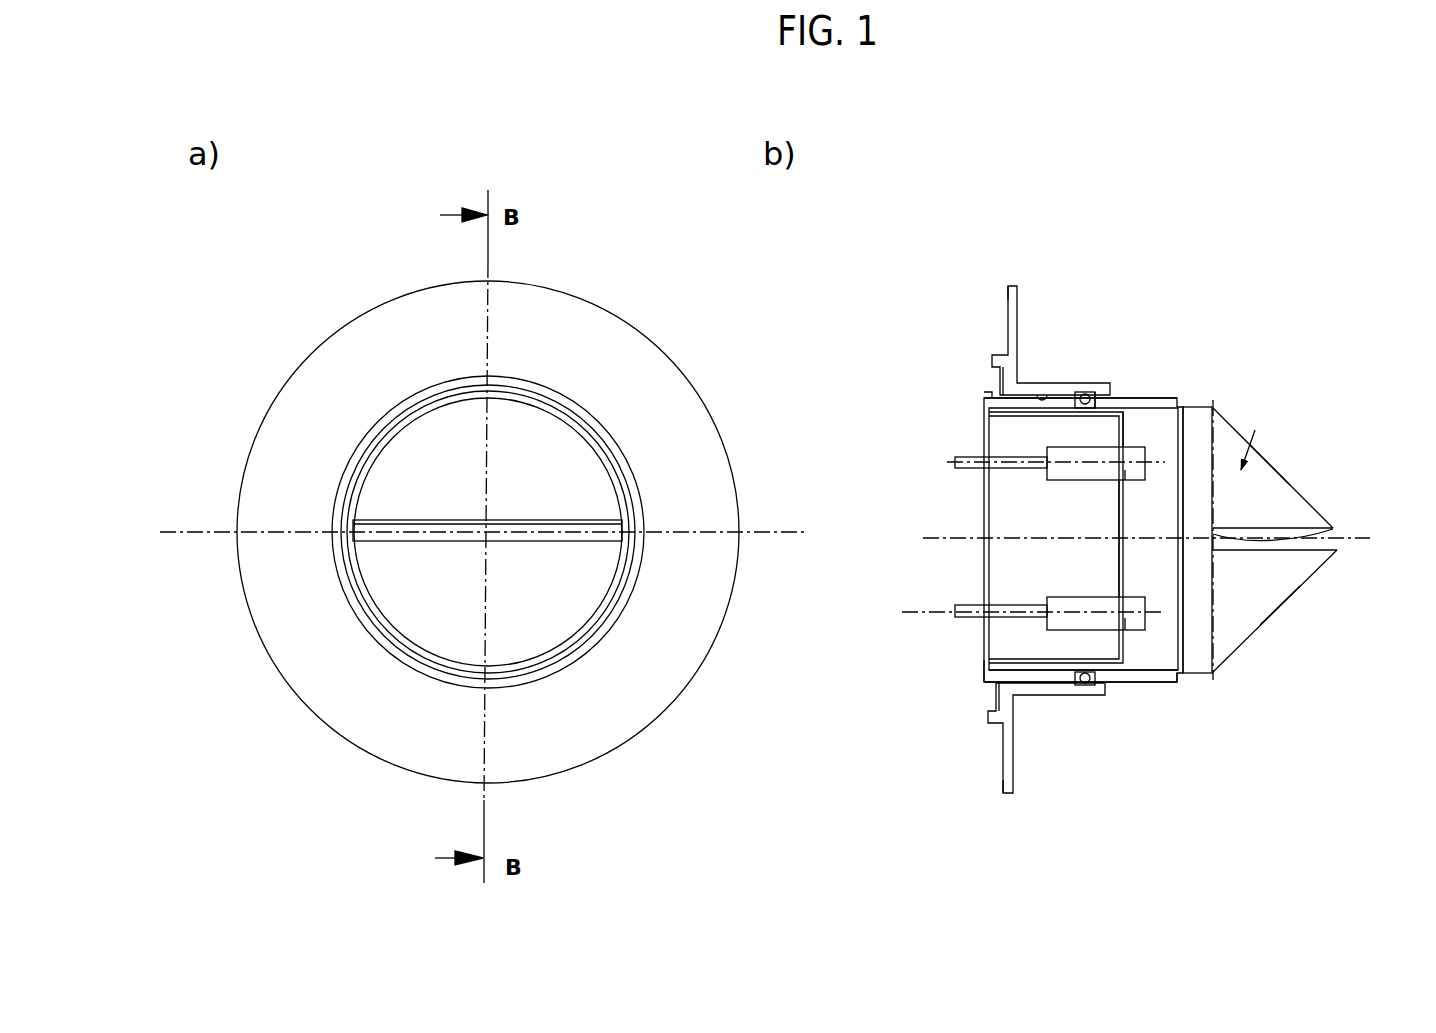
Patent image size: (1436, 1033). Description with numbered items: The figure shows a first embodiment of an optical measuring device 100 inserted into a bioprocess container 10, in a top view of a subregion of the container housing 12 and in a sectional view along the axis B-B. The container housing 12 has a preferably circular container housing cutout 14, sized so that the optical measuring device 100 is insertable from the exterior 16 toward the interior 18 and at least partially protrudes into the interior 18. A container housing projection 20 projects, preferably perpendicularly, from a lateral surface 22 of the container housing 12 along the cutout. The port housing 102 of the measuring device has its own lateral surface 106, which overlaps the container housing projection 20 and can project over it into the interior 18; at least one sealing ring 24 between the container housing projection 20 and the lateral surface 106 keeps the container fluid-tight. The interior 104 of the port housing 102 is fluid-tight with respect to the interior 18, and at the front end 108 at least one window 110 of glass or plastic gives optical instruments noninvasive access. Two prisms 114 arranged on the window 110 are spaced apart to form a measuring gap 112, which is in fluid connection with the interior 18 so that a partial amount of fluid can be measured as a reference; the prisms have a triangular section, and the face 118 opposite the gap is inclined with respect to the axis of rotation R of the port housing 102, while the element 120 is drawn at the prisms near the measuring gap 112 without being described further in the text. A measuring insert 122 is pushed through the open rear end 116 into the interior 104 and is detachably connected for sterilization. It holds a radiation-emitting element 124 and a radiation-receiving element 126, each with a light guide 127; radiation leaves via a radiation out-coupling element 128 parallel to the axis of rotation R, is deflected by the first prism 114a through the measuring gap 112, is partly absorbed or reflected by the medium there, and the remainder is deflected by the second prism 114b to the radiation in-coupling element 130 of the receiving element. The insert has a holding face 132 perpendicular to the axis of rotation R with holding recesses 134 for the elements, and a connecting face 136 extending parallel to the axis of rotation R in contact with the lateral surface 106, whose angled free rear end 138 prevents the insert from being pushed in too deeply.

The bioprocess container 10 is at (1005, 318).
The container housing 12 is at (1003, 763).
The container housing cutout 14 is at (1045, 394).
The exterior 16 is at (1006, 322).
The interior 18 is at (1013, 765).
The container housing projection 20 is at (1086, 380).
The lateral surface 22 is at (1006, 345).
The sealing ring 24 is at (1096, 394).
The optical measuring device 100 is at (1172, 683).
The port housing 102 is at (1152, 398).
The interior 104 is at (1143, 661).
The lateral surface 106 is at (1130, 685).
The front end 108 is at (1180, 675).
The window 110 is at (1195, 655).
The measuring gap 112 is at (1300, 541).
The prisms 114 is at (1255, 447).
The first prism 114a is at (1288, 492).
The second prism 114b is at (1288, 580).
The rear end 116 is at (986, 402).
The face 118 is at (1238, 428).
The flap edge 120 is at (1333, 529).
The measuring insert 122 is at (1127, 563).
The radiation-emitting element 124 is at (1125, 470).
The radiation-receiving element 126 is at (1127, 618).
The light guide 127 is at (966, 454).
The radiation out-coupling element 128 is at (1133, 460).
The radiation in-coupling element 130 is at (1075, 600).
The holding face 132 is at (1120, 518).
The holding recess 134 is at (1123, 445).
The connecting face 136 is at (1108, 420).
The rear end 138 is at (985, 665).
The axis of rotation R is at (952, 538).